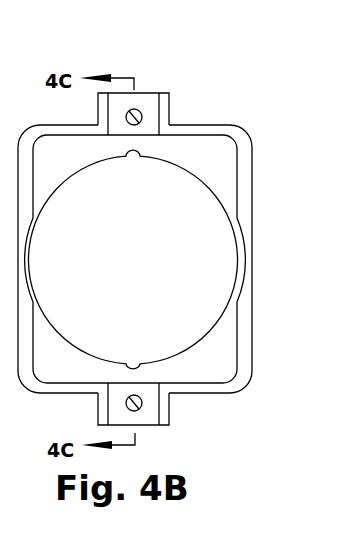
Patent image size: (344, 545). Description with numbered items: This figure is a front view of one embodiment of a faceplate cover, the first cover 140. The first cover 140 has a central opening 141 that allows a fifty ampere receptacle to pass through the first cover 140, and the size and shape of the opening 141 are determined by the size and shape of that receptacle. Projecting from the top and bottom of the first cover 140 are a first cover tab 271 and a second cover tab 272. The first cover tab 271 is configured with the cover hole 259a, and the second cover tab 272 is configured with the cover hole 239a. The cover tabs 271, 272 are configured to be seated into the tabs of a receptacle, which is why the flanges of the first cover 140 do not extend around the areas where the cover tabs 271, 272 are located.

The first cover 140 is at (261, 175).
The opening 141 is at (236, 249).
The first cover tab 271 is at (148, 103).
The second cover tab 272 is at (152, 420).
The cover hole 259a is at (142, 117).
The cover hole 239a is at (142, 404).